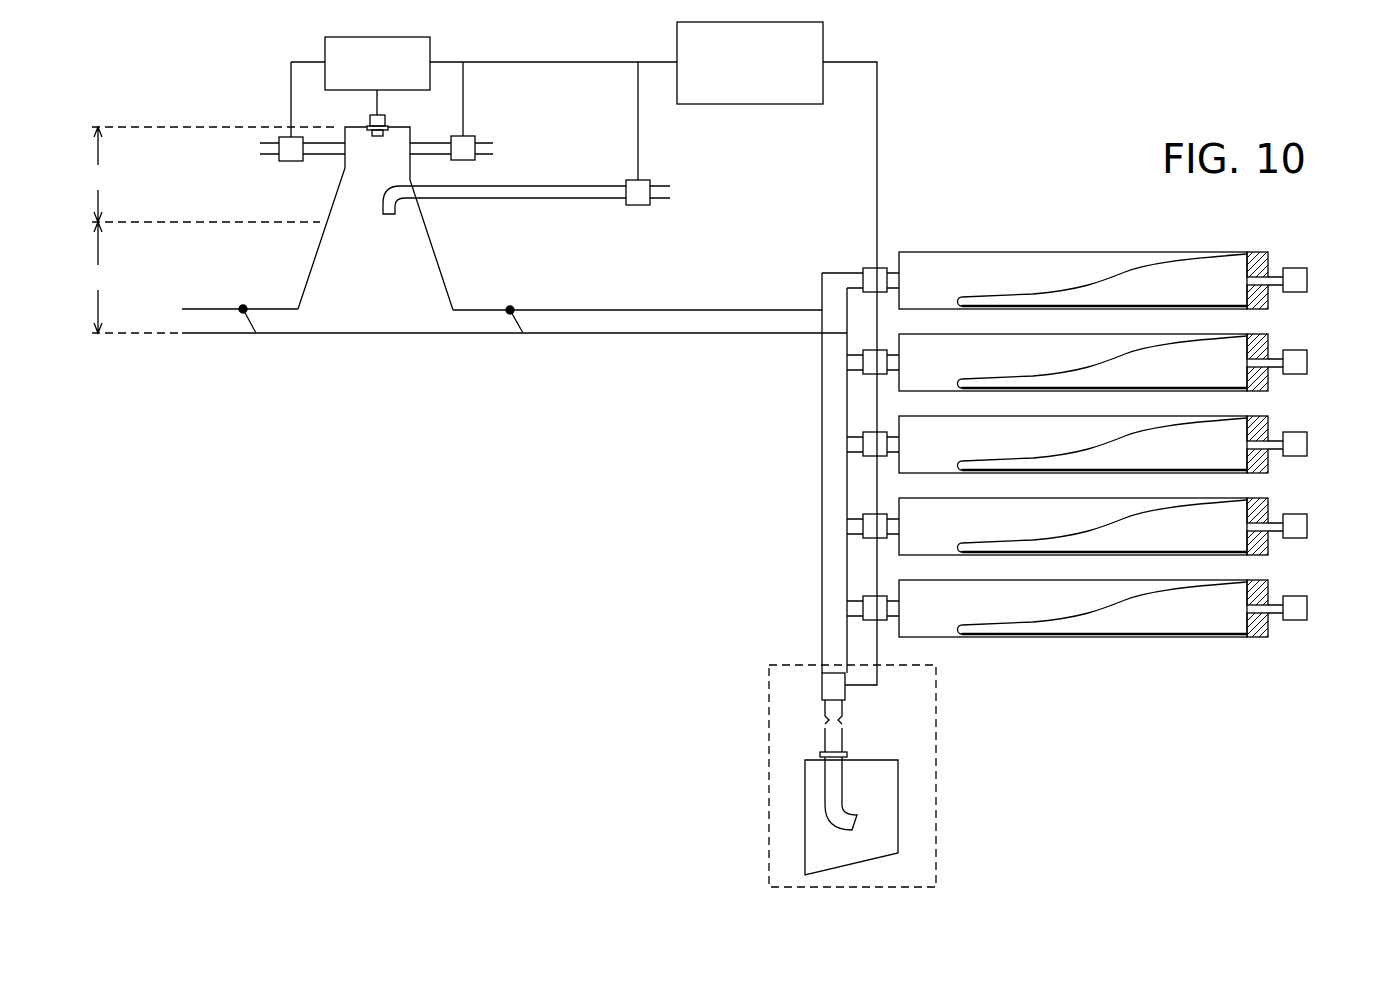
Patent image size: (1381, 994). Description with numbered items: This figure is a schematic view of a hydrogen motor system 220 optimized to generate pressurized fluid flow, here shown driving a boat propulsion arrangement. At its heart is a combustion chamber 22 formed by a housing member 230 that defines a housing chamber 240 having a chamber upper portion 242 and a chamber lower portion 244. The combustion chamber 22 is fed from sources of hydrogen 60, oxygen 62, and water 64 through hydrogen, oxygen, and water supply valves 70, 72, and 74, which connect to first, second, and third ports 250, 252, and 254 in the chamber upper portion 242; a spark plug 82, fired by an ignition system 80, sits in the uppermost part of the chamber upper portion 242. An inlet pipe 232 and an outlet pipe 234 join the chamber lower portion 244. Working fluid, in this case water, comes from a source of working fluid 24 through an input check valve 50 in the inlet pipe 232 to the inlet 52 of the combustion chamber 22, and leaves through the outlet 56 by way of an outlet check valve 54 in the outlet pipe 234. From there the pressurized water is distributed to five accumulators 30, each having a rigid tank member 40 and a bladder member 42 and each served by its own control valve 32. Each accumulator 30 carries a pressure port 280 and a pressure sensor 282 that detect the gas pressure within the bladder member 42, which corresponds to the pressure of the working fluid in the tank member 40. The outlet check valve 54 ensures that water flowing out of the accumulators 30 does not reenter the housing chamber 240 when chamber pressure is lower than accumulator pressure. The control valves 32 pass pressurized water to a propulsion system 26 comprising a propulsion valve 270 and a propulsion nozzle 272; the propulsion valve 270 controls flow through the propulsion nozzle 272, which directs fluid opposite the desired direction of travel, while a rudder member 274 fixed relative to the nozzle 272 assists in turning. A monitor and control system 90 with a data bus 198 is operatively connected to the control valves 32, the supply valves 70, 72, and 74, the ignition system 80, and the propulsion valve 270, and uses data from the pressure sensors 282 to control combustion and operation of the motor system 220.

The combustion chamber 22 is at (299, 266).
The source of working fluid 24 is at (171, 326).
The propulsion system 26 is at (768, 740).
The accumulator 30 is at (1027, 240).
The control valve 32 is at (880, 267).
The rigid tank member 40 is at (1075, 252).
The bladder member 42 is at (1160, 262).
The input check valve 50 is at (240, 313).
The inlet 52 is at (287, 323).
The outlet check valve 54 is at (520, 323).
The outlet 56 is at (461, 322).
The source of hydrogen 60 is at (248, 151).
The source of oxygen 62 is at (502, 152).
The source of water 64 is at (679, 196).
The hydrogen supply valve 70 is at (288, 162).
The oxygen supply valve 72 is at (465, 135).
The water supply valve 74 is at (638, 205).
The ignition system 80 is at (325, 55).
The spark plug 82 is at (386, 121).
The monitor and control system 90 is at (775, 104).
The data bus 198 is at (555, 62).
The hydrogen motor system 220 is at (254, 82).
The housing member 230 is at (437, 252).
The inlet pipe 232 is at (282, 333).
The outlet pipe 234 is at (480, 333).
The housing chamber 240 is at (390, 263).
The chamber upper portion 242 is at (97, 174).
The chamber lower portion 244 is at (97, 277).
The first port 250 is at (348, 148).
The second port 252 is at (407, 148).
The third port 254 is at (390, 215).
The propulsion valve 270 is at (822, 690).
The propulsion nozzle 272 is at (860, 825).
The rudder member 274 is at (885, 785).
The pressure port 280 is at (1270, 270).
The pressure sensor 282 is at (1300, 268).